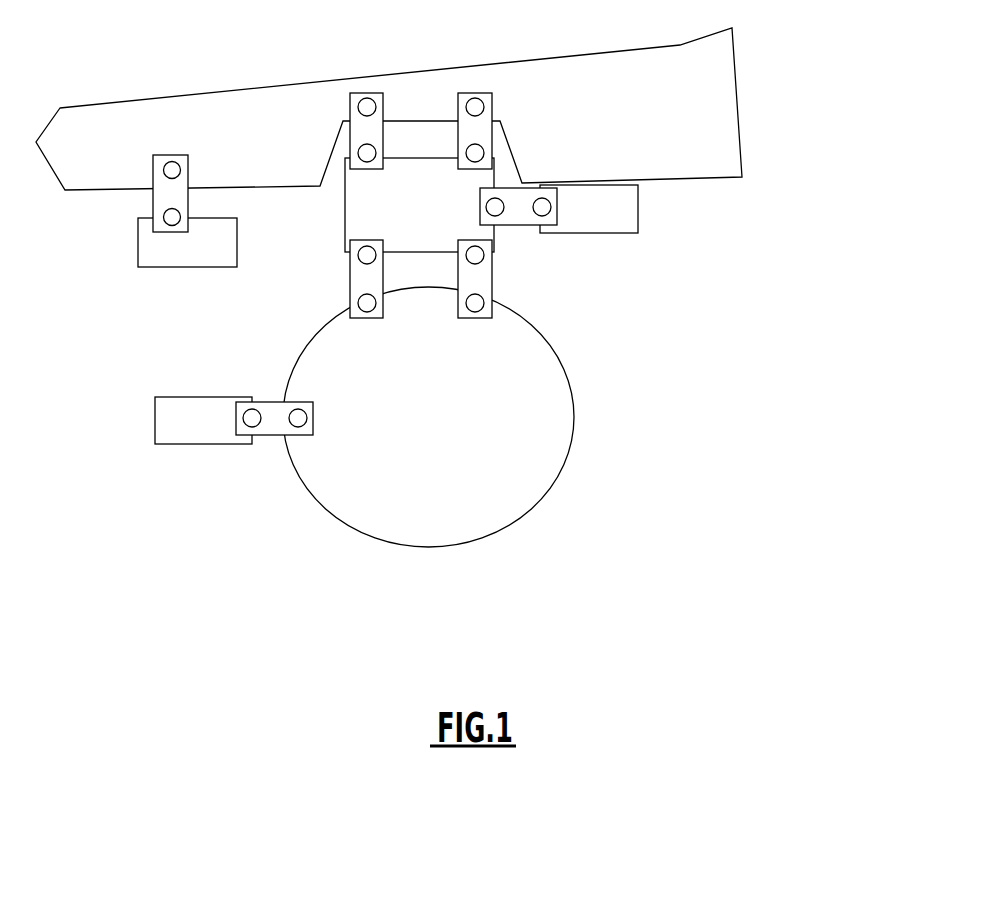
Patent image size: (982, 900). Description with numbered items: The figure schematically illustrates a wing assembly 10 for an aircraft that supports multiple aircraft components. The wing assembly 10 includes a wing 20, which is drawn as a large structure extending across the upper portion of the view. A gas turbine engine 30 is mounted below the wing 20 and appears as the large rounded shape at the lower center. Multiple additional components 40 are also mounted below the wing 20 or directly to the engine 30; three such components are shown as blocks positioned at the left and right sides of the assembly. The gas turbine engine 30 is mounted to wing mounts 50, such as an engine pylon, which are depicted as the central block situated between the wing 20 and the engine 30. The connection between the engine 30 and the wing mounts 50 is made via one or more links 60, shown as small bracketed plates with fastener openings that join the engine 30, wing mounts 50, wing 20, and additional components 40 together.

The wing assembly 10 is at (450, 278).
The wing 20 is at (643, 130).
The gas turbine engine 30 is at (527, 485).
The additional components 40 is at (167, 255).
The wing mounts 50 is at (437, 225).
The links 60 is at (477, 133).